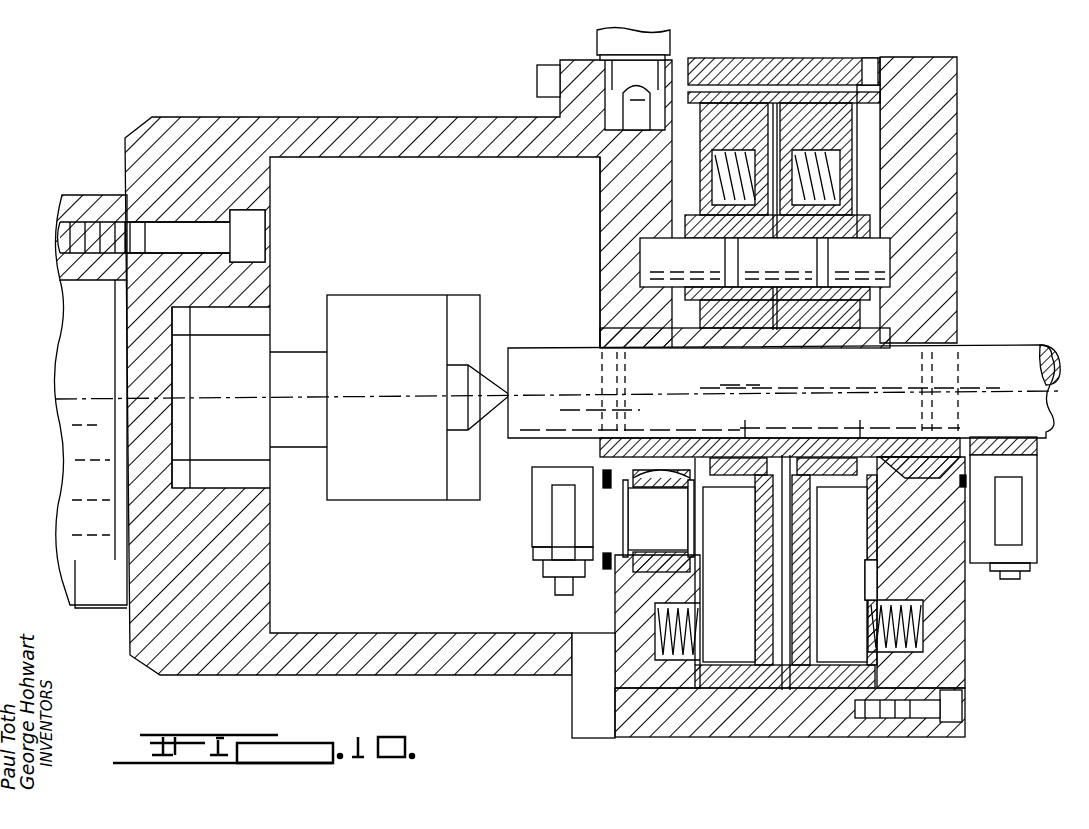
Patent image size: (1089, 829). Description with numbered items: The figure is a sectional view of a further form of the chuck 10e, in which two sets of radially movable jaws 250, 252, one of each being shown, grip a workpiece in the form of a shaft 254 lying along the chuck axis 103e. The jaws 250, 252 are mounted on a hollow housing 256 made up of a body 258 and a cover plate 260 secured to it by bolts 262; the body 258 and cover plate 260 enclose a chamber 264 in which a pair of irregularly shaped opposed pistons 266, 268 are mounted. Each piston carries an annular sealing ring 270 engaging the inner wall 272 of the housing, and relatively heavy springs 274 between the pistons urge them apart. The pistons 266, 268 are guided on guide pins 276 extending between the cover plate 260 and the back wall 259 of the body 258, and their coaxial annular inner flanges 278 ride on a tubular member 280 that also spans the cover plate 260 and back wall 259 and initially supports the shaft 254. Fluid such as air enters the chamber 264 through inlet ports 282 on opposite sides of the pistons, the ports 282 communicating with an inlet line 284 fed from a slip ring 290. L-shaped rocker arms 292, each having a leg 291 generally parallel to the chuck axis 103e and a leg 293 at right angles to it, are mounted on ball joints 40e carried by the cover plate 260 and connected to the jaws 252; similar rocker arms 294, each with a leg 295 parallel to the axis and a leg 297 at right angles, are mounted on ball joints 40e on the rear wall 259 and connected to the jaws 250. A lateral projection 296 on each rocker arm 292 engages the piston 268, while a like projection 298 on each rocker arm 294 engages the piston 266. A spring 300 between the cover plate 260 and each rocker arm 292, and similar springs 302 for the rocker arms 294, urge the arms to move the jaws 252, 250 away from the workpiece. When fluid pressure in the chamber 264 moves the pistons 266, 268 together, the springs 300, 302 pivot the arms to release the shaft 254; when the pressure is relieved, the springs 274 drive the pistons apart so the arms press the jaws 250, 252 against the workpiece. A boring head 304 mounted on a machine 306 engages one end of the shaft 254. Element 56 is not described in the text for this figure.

The chuck 10e is at (440, 694).
The machine 306 is at (291, 622).
The back wall 259 is at (612, 212).
The hollow housing 256 is at (660, 725).
The boring head 304 is at (384, 515).
The jaws 250 is at (555, 458).
The shaft 254 is at (983, 362).
The chuck axis 103e is at (1072, 372).
The coaxial annular inner flanges 278 is at (848, 458).
The ball joints 40e is at (695, 463).
The chamber 264 is at (895, 150).
The inlet line 284 is at (735, 58).
The inlet ports 282 is at (880, 103).
The annular sealing ring 270 is at (815, 103).
The guide pins 276 is at (870, 250).
The springs 274 is at (810, 200).
The tubular member 280 is at (875, 330).
The slip ring 290 is at (610, 70).
The jaws 252 is at (1000, 445).
The retaining ring 56 is at (593, 484).
The leg 291 is at (960, 540).
The leg 295 is at (680, 528).
The piston 266 is at (775, 540).
The rocker arms 294 is at (740, 526).
The projection 298 is at (760, 648).
The inner wall 272 is at (810, 690).
The L-shape rocker arms 292 is at (800, 580).
The piston 268 is at (842, 574).
The lateral projection 296 is at (822, 645).
The leg 297 is at (720, 705).
The leg 293 is at (862, 700).
The body 258 is at (645, 725).
The springs 302 is at (655, 620).
The cover plate 260 is at (950, 665).
The spring 300 is at (915, 625).
The bolts 262 is at (962, 705).